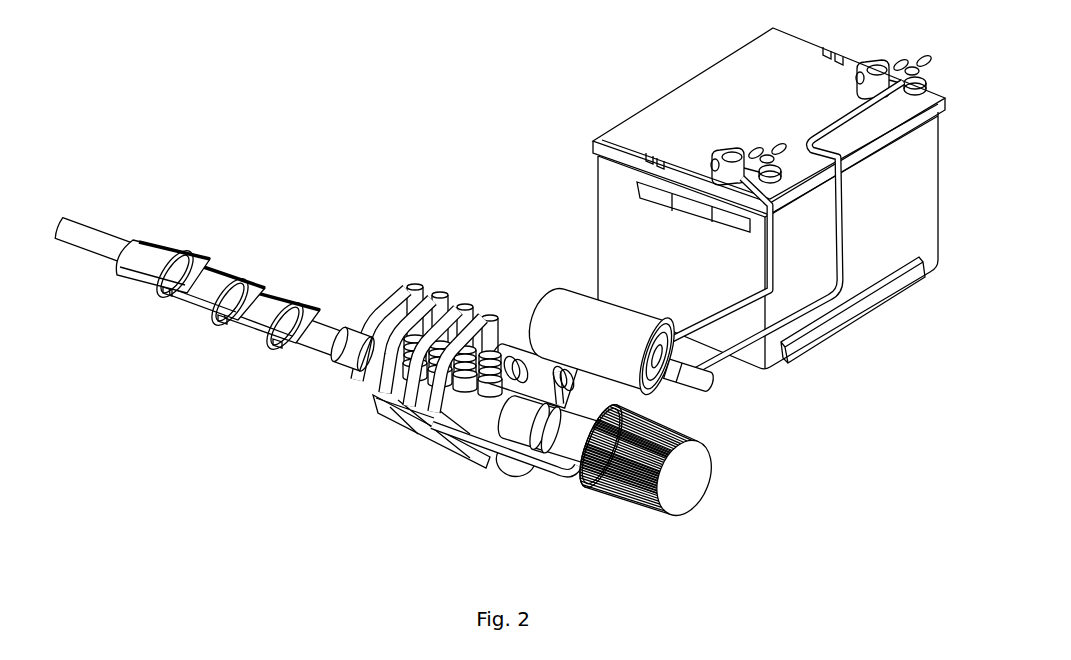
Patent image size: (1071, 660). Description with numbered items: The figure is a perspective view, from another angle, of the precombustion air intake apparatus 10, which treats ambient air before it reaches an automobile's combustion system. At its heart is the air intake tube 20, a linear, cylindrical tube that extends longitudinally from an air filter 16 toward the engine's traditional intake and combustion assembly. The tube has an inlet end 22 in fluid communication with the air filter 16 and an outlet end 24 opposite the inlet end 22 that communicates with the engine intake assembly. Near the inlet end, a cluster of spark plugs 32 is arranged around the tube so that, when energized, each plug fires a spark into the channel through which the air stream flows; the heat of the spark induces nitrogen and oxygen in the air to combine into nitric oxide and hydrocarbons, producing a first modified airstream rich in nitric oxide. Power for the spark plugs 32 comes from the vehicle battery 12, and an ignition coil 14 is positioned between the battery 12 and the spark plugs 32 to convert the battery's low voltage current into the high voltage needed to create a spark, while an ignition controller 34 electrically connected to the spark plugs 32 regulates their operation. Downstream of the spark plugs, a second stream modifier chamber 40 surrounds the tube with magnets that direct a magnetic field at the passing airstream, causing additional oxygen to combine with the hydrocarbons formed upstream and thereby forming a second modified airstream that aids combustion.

The precombustion air intake apparatus 10 is at (349, 134).
The vehicle battery 12 is at (702, 96).
The ignition coil 14 is at (565, 300).
The air filter 16 is at (688, 495).
The air intake tube 20 is at (320, 340).
The inlet end 22 is at (557, 432).
The outlet end 24 is at (56, 226).
The spark plugs 32 is at (483, 380).
The ignition controller 34 is at (410, 433).
The second stream modifier chamber 40 is at (187, 337).